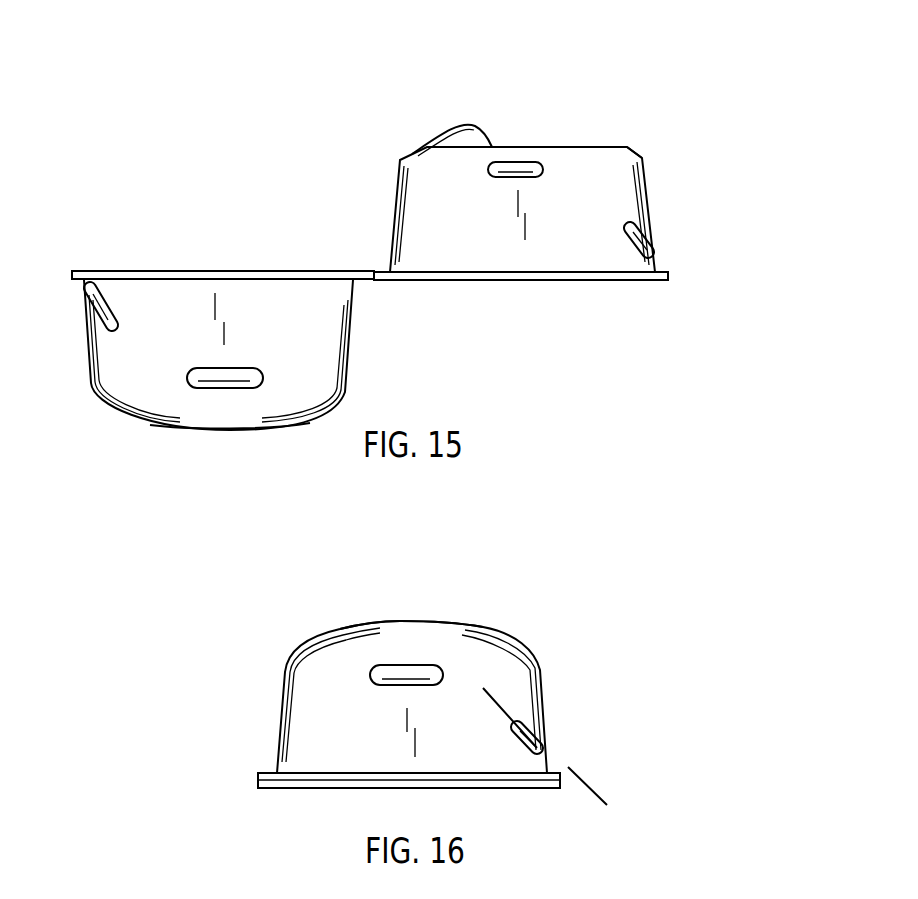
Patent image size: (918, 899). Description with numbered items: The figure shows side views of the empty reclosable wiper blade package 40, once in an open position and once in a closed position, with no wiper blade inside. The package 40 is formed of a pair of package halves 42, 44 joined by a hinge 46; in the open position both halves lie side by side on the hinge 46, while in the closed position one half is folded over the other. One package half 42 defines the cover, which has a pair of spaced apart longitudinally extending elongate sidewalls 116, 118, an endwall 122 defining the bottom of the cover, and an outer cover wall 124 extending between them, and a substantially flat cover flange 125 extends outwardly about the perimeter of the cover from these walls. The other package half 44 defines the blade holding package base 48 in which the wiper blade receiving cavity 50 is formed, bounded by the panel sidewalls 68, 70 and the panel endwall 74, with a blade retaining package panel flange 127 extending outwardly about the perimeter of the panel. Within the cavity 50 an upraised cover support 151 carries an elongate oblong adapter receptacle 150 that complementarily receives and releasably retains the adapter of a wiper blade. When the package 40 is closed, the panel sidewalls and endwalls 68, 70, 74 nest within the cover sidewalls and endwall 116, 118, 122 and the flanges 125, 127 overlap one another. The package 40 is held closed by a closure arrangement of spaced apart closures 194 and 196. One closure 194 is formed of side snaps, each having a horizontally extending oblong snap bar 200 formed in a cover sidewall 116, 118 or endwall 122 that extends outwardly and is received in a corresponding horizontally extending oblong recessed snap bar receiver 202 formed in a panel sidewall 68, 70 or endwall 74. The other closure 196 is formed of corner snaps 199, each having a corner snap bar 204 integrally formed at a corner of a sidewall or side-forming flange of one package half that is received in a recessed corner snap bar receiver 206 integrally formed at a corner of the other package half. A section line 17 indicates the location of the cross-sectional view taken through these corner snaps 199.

In FIG. 16, the section line 17- 17 is at (583, 775).
In FIG. 15, the reclosable wiper blade package 40 is at (722, 120).
In FIG. 16, the reclosable wiper blade package 40 is at (452, 669).
In FIG. 15, the package half 42 is at (218, 376).
In FIG. 15, the package half 44 is at (523, 164).
In FIG. 15, the hinge 46 is at (377, 290).
In FIG. 16, the hinge 46 is at (253, 780).
In FIG. 15, the blade holding package base 48 is at (640, 125).
In FIG. 15, the wiper blade receiving cavity 50 is at (598, 118).
In FIG. 15, the panel sidewall 68 is at (393, 215).
In FIG. 15, the panel sidewall 70 is at (640, 170).
In FIG. 15, the panel endwall 74 is at (470, 243).
In FIG. 15, the cover sidewall 116 is at (90, 375).
In FIG. 16, the cover sidewall 116 is at (543, 673).
In FIG. 15, the cover sidewall 118 is at (350, 347).
In FIG. 16, the cover sidewall 118 is at (283, 680).
In FIG. 15, the cover endwall 122 is at (157, 395).
In FIG. 16, the cover endwall 122 is at (357, 748).
In FIG. 15, the outer cover wall 124 is at (223, 432).
In FIG. 16, the outer cover wall 124 is at (458, 626).
In FIG. 15, the cover flange 125 is at (70, 271).
In FIG. 15, the blade retaining package panel flange 127 is at (670, 276).
In FIG. 15, the adapter receptacle 150 is at (507, 108).
In FIG. 15, the upraised cover support 151 is at (454, 135).
In FIG. 16, the package closure 194 is at (363, 680).
In FIG. 16, the package closure 196 is at (581, 729).
In FIG. 16, the corner snap 199 is at (569, 718).
In FIG. 15, the snap bar 200 is at (233, 365).
In FIG. 16, the snap bar 200 is at (398, 666).
In FIG. 15, the recessed snap bar receiver 202 is at (528, 160).
In FIG. 15, the corner snap bar 204 is at (100, 317).
In FIG. 16, the corner snap bar 204 is at (537, 755).
In FIG. 15, the recessed corner snap bar receiver 206 is at (628, 228).